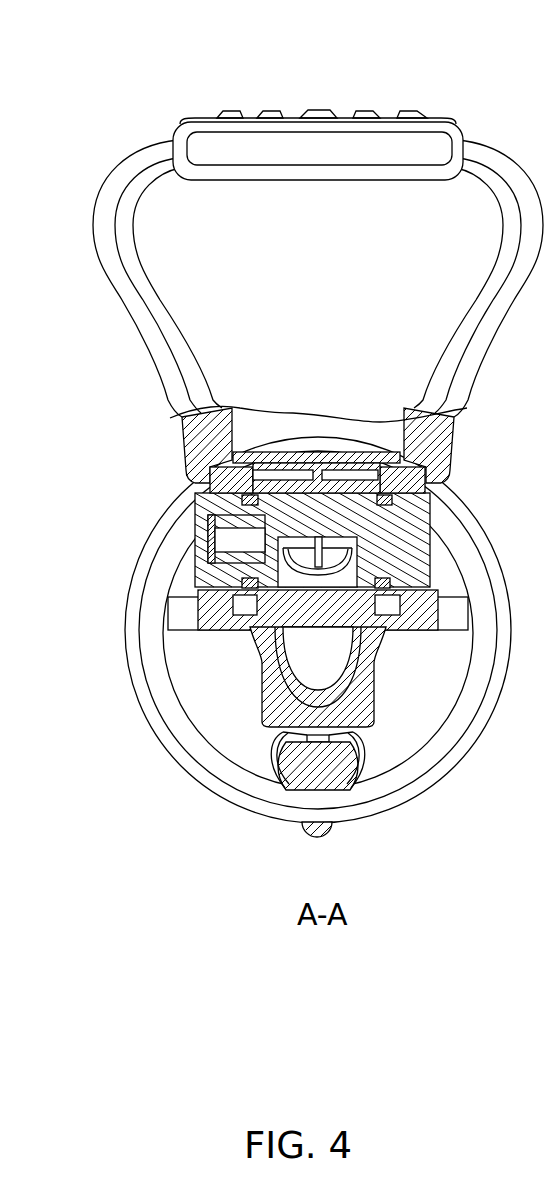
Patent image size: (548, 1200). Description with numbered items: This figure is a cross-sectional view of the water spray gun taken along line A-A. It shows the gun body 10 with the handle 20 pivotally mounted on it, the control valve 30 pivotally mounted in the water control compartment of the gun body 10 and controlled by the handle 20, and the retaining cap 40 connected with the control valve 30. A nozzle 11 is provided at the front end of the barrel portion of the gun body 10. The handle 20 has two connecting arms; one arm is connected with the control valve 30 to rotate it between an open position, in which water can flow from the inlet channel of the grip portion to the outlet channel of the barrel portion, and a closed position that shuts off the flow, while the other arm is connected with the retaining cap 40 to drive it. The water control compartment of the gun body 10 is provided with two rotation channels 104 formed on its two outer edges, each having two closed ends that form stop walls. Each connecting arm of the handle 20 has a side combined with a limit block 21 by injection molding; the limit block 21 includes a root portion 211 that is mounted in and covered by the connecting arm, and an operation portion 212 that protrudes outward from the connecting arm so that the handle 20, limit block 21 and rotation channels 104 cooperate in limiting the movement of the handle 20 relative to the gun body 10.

The gun body 10 is at (373, 763).
The nozzle 11 is at (175, 752).
The handle 20 is at (403, 108).
The limit block 21 is at (324, 436).
The control valve 30 is at (444, 541).
The retaining cap 40 is at (194, 548).
The rotation channels 104 is at (337, 452).
The root portion 211 is at (188, 472).
The operation portion 212 is at (174, 440).